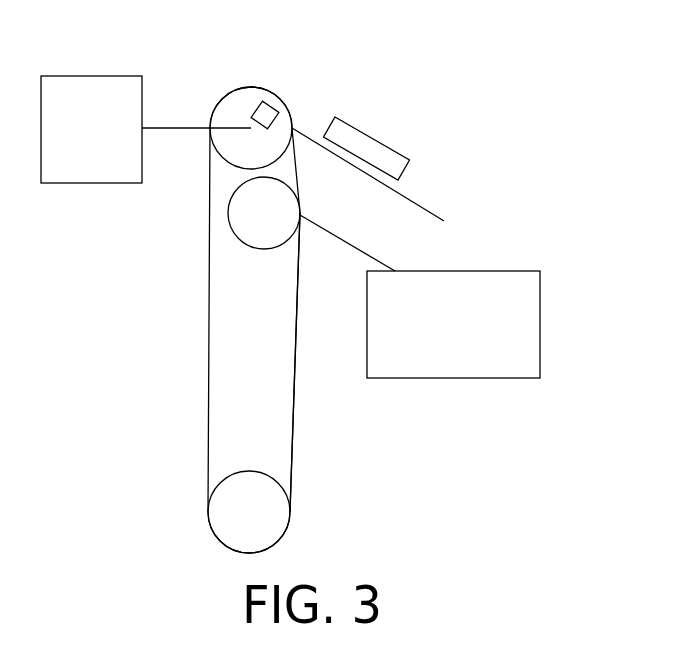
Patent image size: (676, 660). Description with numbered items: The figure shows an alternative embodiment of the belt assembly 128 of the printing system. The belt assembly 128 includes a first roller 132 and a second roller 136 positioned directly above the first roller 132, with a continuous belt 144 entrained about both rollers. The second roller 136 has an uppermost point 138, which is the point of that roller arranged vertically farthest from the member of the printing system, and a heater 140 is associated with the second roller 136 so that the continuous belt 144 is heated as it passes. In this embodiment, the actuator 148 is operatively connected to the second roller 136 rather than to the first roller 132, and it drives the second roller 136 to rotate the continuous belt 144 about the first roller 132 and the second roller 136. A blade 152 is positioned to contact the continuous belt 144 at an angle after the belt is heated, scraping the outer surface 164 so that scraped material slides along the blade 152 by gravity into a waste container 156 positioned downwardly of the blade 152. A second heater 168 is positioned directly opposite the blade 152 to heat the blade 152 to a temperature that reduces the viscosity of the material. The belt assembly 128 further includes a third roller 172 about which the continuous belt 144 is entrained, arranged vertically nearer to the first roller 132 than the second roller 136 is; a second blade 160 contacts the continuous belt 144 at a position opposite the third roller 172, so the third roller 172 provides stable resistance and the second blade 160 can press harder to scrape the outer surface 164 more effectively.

The belt assembly 128 is at (421, 64).
The first roller 132 is at (277, 520).
The second roller 136 is at (235, 97).
The uppermost point 138 is at (251, 87).
The heater 140 is at (268, 116).
The continuous belt 144 is at (293, 443).
The actuator 148 is at (90, 76).
The blade 152 is at (413, 200).
The waste container 156 is at (540, 325).
The second blade 160 is at (365, 250).
The outer surface 164 is at (297, 362).
The second heater 168 is at (375, 135).
The third roller 172 is at (283, 205).